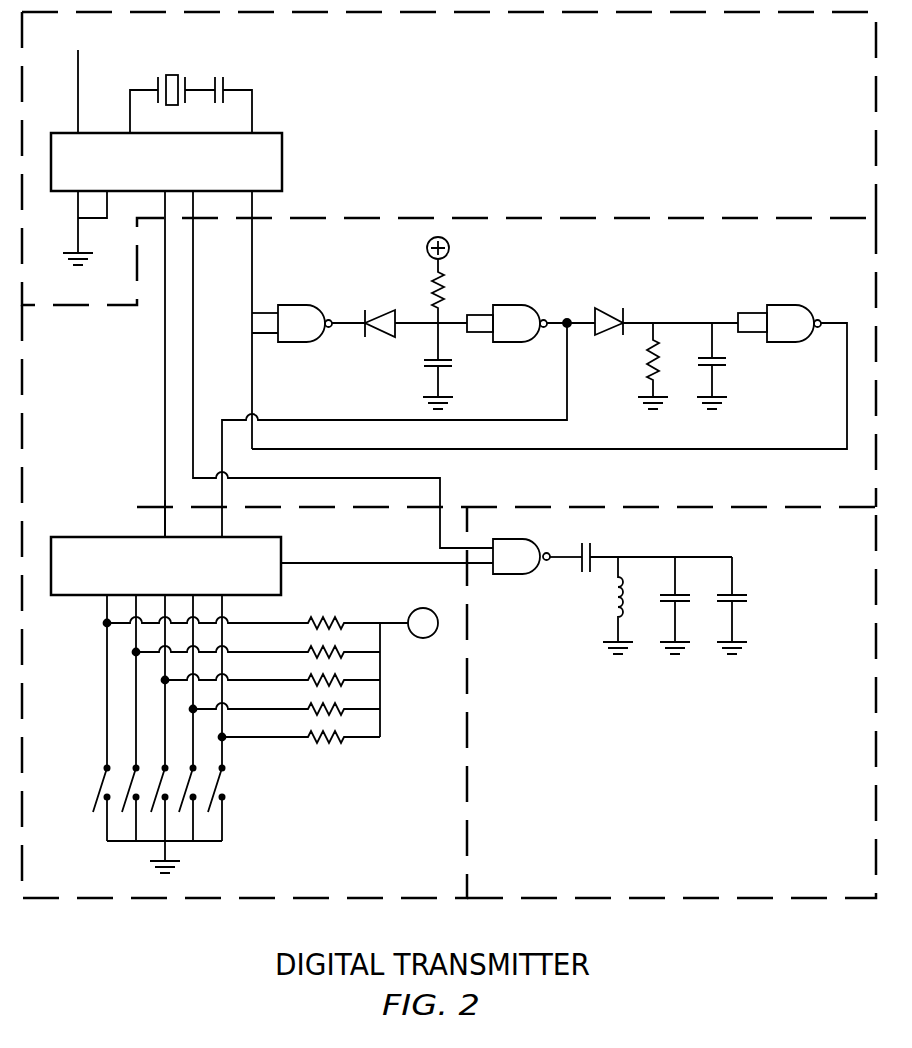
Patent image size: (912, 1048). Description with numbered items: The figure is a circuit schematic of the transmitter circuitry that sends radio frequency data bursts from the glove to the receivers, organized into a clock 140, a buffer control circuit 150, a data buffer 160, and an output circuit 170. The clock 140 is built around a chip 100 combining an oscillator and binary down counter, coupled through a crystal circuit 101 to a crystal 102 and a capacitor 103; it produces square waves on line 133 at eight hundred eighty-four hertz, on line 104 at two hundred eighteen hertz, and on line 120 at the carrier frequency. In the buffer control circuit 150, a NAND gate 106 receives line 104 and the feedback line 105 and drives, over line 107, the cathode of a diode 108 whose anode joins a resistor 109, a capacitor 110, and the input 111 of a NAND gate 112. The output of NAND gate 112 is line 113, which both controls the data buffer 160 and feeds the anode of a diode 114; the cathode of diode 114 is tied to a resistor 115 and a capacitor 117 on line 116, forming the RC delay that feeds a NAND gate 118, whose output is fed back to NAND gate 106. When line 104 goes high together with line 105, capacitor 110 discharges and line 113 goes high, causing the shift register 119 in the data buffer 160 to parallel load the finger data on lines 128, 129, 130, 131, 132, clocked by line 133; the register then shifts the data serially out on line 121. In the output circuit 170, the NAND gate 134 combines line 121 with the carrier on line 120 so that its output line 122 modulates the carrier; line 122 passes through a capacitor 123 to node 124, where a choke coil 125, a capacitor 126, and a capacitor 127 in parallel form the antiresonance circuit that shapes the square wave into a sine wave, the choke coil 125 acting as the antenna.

The chip 100 is at (152, 177).
The crystal circuit 101 is at (145, 88).
The crystal 102 is at (173, 75).
The capacitor 103 is at (220, 75).
The line 104 is at (268, 310).
The line 105 is at (267, 337).
The NAND gate 106 is at (287, 332).
The line 107 is at (348, 320).
The diode 108 is at (378, 327).
The resistor 109 is at (445, 283).
The capacitor 110 is at (453, 363).
The Schmitt trigger input 111 is at (470, 315).
The NAND gate 112 is at (502, 332).
The line 113 is at (570, 312).
The diode 114 is at (620, 313).
The resistor 115 is at (643, 360).
The line 116 is at (675, 318).
The capacitor 117 is at (727, 362).
The NAND gate 118 is at (776, 332).
The shift register 119 is at (152, 576).
The line 120 is at (197, 313).
The data output line 121 is at (482, 567).
The line 122 is at (558, 558).
The capacitor 123 is at (590, 545).
The output node 124 is at (657, 555).
The choke coil 125 is at (615, 617).
The capacitor 126 is at (688, 607).
The capacitor 127 is at (758, 595).
The line 128 is at (105, 624).
The line 129 is at (134, 653).
The line 130 is at (163, 681).
The line 131 is at (191, 710).
The line 132 is at (225, 740).
The line 133 is at (163, 515).
The NAND gate 134 is at (502, 566).
The clock 140 is at (813, 43).
The buffer control circuit 150 is at (678, 251).
The data buffer 160 is at (345, 893).
The output circuit 170 is at (727, 893).